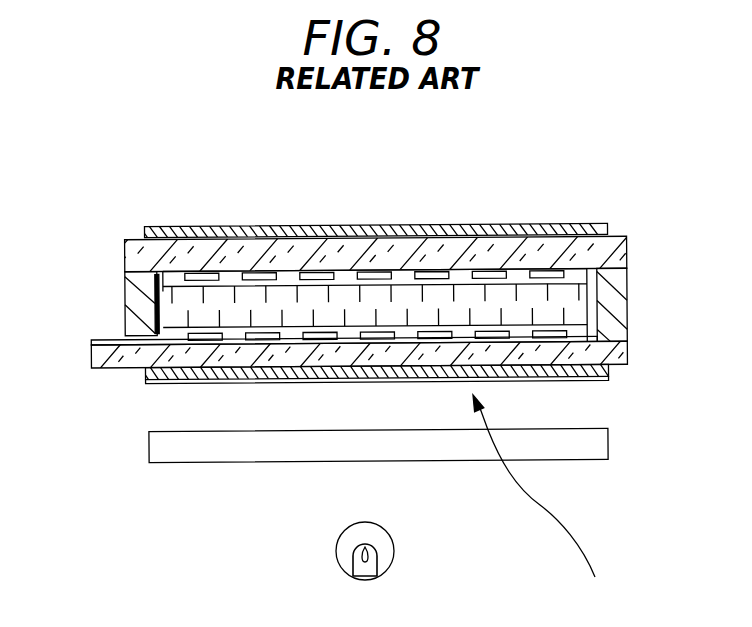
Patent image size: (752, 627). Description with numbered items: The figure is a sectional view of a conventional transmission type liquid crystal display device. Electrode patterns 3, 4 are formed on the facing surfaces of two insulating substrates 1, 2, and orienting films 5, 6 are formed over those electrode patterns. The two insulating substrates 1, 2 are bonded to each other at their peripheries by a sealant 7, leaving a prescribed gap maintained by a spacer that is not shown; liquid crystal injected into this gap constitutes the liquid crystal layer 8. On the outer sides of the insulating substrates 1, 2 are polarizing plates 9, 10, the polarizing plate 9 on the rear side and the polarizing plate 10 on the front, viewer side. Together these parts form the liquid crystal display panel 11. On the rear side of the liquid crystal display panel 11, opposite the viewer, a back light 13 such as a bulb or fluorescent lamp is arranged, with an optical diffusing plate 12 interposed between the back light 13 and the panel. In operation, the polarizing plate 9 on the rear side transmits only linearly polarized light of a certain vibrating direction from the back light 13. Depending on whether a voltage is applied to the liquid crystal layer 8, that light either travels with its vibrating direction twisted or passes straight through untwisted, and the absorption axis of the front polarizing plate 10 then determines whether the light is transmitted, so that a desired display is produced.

The insulating substrate 1 is at (612, 355).
The insulating substrate 2 is at (137, 260).
The electrode pattern 3 is at (145, 382).
The electrode pattern 4 is at (550, 270).
The orienting film 5 is at (584, 343).
The orienting film 6 is at (583, 283).
The sealant 7 is at (130, 322).
The liquid crystal layer 8 is at (156, 302).
The polarizing plate 9 is at (197, 341).
The polarizing plate 10 is at (343, 225).
The liquid crystal display panel 11 is at (543, 501).
The optical diffusing plate 12 is at (217, 463).
The back light 13 is at (382, 552).